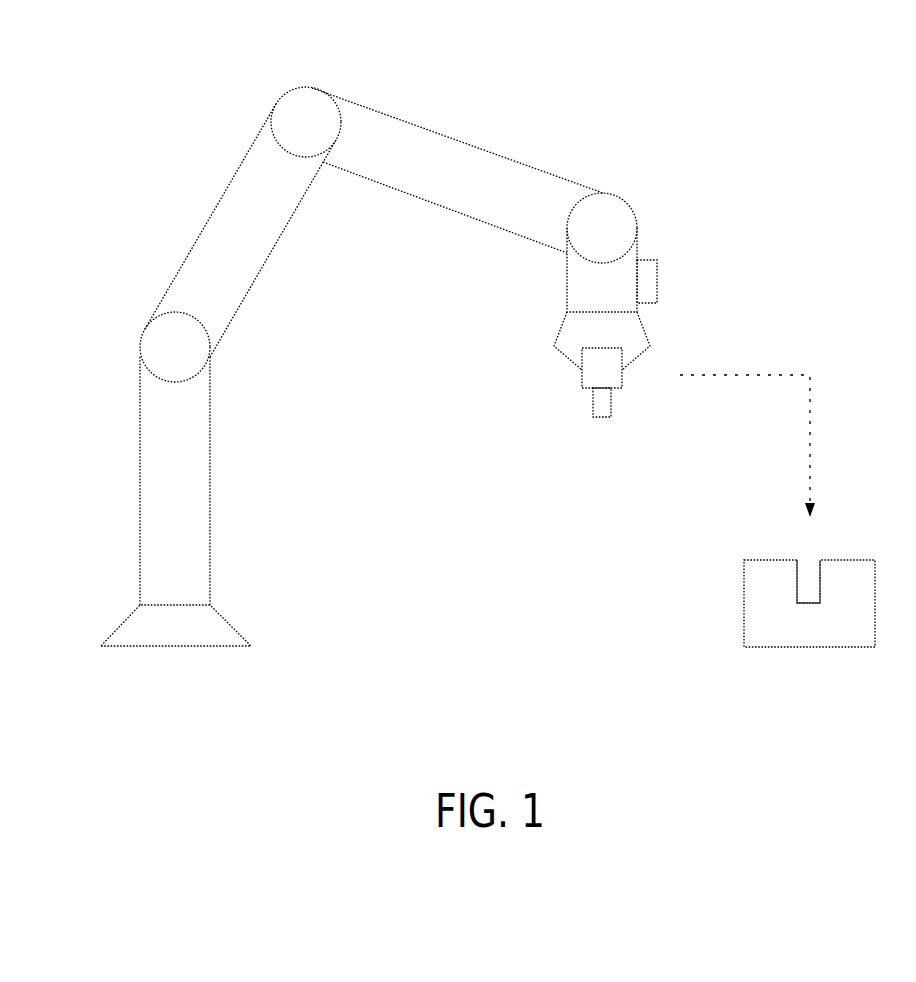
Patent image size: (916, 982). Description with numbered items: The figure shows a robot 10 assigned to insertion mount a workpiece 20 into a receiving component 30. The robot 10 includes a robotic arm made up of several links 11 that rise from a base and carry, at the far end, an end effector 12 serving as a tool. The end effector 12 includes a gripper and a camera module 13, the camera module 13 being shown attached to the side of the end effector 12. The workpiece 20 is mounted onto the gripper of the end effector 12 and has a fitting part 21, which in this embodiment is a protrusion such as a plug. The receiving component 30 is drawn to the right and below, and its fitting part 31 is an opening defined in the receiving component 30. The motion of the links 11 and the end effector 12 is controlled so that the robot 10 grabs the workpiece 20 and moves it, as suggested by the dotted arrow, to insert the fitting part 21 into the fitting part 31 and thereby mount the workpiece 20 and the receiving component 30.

The robot 10 is at (197, 144).
The links 11 is at (373, 145).
The end effector 12 is at (567, 302).
The camera module 13 is at (657, 282).
The workpiece 20 is at (582, 388).
The fitting part 21 is at (593, 417).
The receiving component 30 is at (744, 600).
The fitting part 31 is at (808, 587).